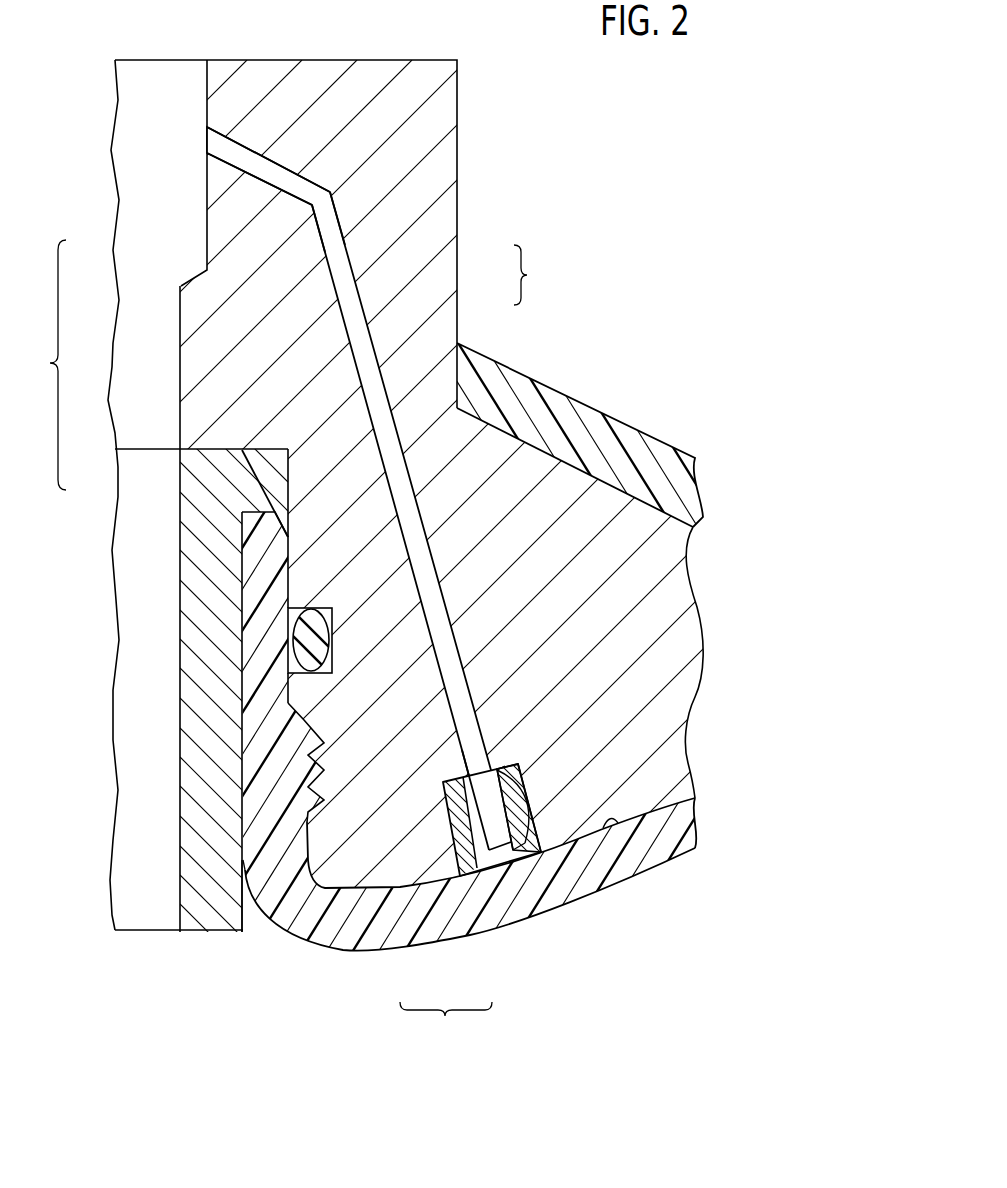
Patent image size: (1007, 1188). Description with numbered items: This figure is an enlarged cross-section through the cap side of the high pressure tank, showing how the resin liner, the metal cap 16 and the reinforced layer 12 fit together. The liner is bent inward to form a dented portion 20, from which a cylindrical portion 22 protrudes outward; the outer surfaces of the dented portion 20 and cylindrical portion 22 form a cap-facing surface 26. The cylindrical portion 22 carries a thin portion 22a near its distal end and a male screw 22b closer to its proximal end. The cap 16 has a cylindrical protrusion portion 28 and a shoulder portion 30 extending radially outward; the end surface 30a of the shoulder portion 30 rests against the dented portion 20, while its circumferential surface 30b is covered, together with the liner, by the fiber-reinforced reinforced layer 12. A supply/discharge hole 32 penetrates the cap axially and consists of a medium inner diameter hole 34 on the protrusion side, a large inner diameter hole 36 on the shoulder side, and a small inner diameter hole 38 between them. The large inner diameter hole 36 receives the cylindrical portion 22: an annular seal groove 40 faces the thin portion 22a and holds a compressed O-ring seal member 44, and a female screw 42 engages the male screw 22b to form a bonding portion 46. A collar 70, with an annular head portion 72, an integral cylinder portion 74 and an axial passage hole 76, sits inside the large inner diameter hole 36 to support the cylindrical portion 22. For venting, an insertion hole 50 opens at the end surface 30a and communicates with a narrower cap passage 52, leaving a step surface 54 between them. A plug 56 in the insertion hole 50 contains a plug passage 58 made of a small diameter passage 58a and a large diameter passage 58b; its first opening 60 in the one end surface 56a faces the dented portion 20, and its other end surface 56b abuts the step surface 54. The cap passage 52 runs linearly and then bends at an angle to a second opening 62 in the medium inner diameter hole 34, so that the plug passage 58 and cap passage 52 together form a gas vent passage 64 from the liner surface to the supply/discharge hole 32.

The reinforced layer 12 is at (625, 430).
The cap 16 is at (532, 275).
The dented portion 20 is at (673, 853).
The cylindrical portion 22 is at (258, 699).
The thin portion 22a is at (267, 568).
The male screw 22b is at (322, 828).
The cap-facing surface 26 is at (618, 832).
The protrusion portion 28 is at (433, 263).
The shoulder portion 30 is at (492, 457).
The end surface 30a is at (588, 828).
The circumferential surface 30b is at (555, 450).
The supply/discharge hole 32 is at (74, 495).
The medium inner diameter hole 34 is at (207, 228).
The large inner diameter hole 36 is at (288, 483).
The small inner diameter hole 38 is at (180, 375).
The seal groove 40 is at (302, 620).
The female screw 42 is at (318, 740).
The seal member 44 is at (293, 655).
The bonding portion 46 is at (308, 807).
The insertion hole 50 is at (540, 805).
The cap passage 52 is at (249, 155).
The step surface 54 is at (527, 784).
The plug 56 is at (527, 853).
The one end surface 56a is at (517, 853).
The other end surface 56b is at (505, 765).
The plug passage 58 is at (446, 1021).
The small diameter passage 58a is at (490, 855).
The large diameter passage 58b is at (462, 852).
The first opening 60 is at (507, 860).
The second opening 62 is at (207, 140).
The gas vent passage 64 is at (458, 597).
The collar 70 is at (160, 585).
The head portion 72 is at (222, 457).
The cylinder portion 74 is at (192, 547).
The passage hole 76 is at (135, 652).